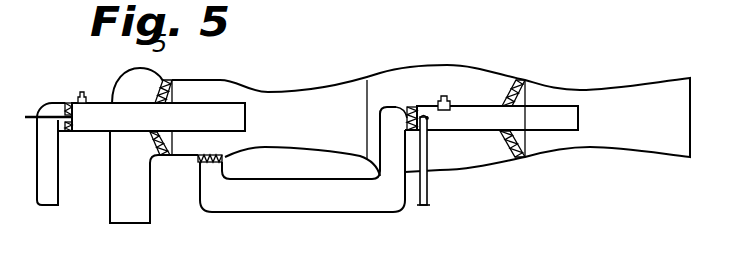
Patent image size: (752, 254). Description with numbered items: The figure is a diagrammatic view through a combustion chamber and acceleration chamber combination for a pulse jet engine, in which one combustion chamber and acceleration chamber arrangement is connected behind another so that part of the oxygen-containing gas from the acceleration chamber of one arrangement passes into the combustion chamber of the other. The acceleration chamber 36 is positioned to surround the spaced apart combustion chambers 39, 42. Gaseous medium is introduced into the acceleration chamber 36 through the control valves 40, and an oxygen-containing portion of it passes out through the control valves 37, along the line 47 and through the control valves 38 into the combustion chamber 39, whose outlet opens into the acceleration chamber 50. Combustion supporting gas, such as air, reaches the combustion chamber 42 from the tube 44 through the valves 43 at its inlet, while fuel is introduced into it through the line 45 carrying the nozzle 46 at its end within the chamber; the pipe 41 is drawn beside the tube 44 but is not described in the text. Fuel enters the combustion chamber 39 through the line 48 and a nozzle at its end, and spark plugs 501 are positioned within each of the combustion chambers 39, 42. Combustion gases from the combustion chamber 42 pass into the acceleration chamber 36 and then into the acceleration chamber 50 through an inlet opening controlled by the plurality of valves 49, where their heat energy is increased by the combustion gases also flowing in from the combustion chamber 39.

The acceleration chamber 36 is at (323, 88).
The control valves 37 is at (216, 164).
The control valves 38 is at (395, 106).
The combustion chamber 39 is at (497, 118).
The control valves 40 is at (160, 88).
The inlet pipe 41 is at (118, 197).
The combustion chamber 42 is at (158, 117).
The valves 43 is at (60, 103).
The tube 44 is at (59, 165).
The line 45 is at (30, 117).
The nozzle 46 is at (428, 118).
The line 47 is at (302, 171).
The line 48 is at (428, 192).
The valves 49 is at (503, 89).
The acceleration chamber 50 is at (645, 93).
The spark plugs 501 is at (84, 91).